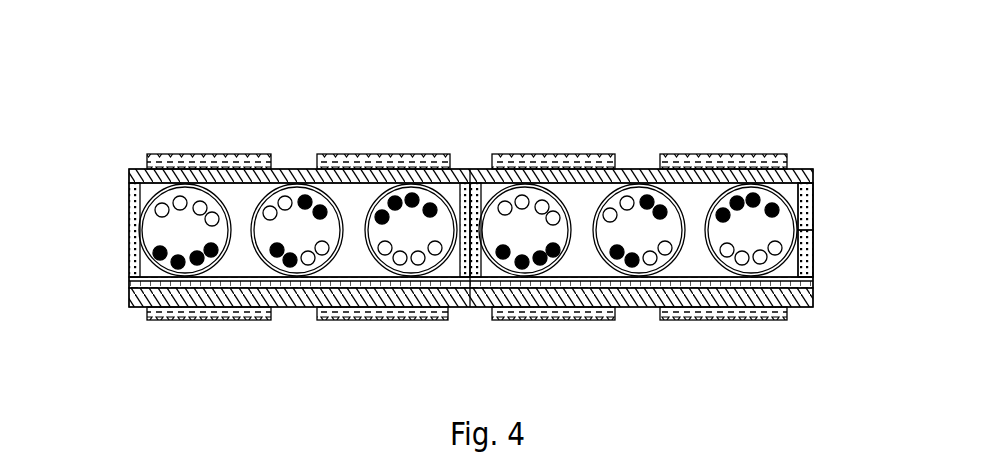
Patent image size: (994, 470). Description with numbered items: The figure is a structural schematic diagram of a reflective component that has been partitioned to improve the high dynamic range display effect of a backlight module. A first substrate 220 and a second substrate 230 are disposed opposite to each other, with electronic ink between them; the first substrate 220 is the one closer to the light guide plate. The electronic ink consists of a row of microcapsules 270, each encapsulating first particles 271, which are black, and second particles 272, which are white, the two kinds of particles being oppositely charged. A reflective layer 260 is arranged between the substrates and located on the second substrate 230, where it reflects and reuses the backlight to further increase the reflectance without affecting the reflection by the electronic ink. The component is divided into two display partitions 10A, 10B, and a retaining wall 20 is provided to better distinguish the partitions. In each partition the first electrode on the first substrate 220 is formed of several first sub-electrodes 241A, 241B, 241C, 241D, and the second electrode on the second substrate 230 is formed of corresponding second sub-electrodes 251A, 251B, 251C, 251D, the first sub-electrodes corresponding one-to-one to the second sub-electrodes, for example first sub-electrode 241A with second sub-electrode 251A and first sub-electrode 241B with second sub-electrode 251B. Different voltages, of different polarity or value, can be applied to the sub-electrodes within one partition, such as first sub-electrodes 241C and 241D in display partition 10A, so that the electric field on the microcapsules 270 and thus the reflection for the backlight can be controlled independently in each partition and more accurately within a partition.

The display partition 10A is at (274, 100).
The display partition 10B is at (629, 98).
The retaining wall 20 is at (132, 233).
The first substrate 220 is at (813, 172).
The second substrate 230 is at (813, 297).
The first sub-electrode 241A is at (787, 157).
The first sub-electrode 241B is at (510, 158).
The first sub-electrode 241C is at (358, 158).
The first sub-electrode 241D is at (173, 157).
The second sub-electrode 251A is at (790, 315).
The second sub-electrode 251B is at (562, 313).
The second sub-electrode 251C is at (365, 313).
The second sub-electrode 251D is at (160, 315).
The reflective layer 260 is at (813, 280).
The microcapsule 270 is at (787, 243).
The first particles 271 is at (813, 196).
The second particles 272 is at (813, 240).